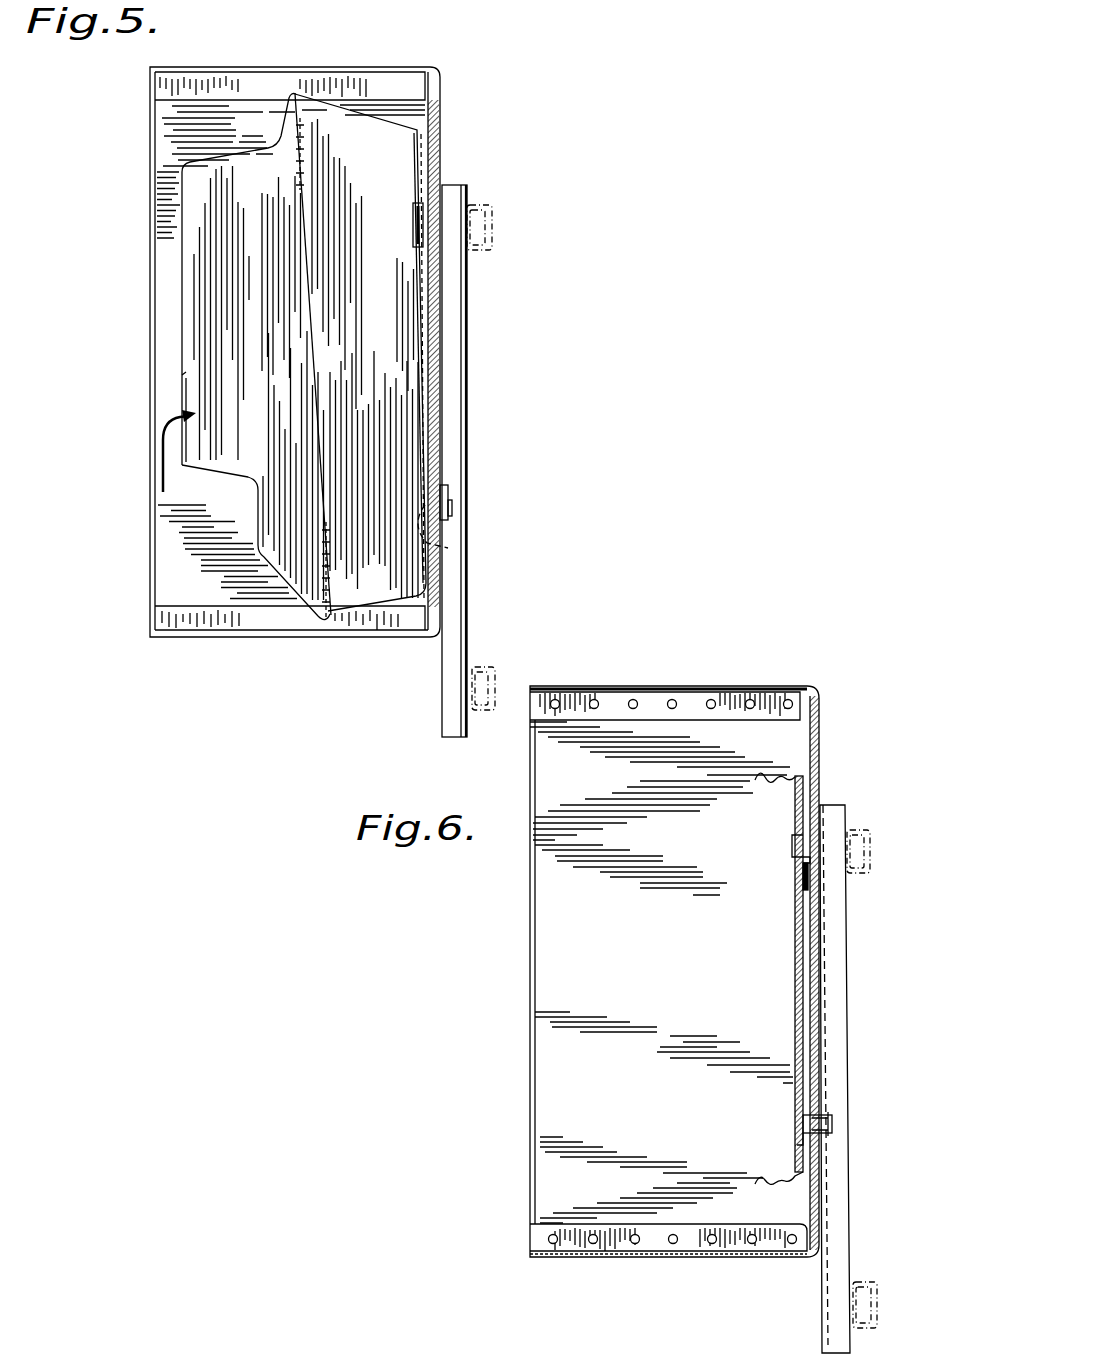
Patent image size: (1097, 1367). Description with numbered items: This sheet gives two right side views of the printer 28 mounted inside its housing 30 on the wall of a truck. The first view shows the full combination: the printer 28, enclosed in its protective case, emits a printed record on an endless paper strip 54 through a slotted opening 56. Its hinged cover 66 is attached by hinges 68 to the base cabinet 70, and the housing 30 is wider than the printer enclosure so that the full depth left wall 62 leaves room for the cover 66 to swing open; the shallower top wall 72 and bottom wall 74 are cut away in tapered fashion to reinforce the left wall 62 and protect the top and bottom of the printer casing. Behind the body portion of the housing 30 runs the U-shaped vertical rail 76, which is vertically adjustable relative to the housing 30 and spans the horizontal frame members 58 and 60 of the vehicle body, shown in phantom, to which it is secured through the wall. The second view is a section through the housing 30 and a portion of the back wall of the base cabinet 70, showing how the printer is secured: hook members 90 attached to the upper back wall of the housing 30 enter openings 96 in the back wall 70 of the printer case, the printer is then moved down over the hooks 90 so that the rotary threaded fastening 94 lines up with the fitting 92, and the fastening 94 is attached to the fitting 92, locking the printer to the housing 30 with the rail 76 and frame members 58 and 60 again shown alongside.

In FIG. 5, the printer 28 is at (378, 468).
In FIG. 5, the housing 30 is at (350, 55).
In FIG. 6, the housing 30 is at (780, 670).
In FIG. 5, the endless paper strip 54 is at (163, 457).
In FIG. 5, the slotted opening 56 is at (182, 410).
In FIG. 5, the horizontal frame member 58 is at (495, 215).
In FIG. 6, the horizontal frame member 58 is at (872, 845).
In FIG. 5, the horizontal frame member 60 is at (492, 665).
In FIG. 6, the horizontal frame member 60 is at (880, 1300).
In FIG. 5, the left wall 62 is at (160, 135).
In FIG. 6, the left wall 62 is at (548, 988).
In FIG. 5, the hinged cover 66 is at (205, 237).
In FIG. 5, the hinges 68 is at (302, 153).
In FIG. 5, the base cabinet 70 is at (400, 360).
In FIG. 6, the base cabinet 70 is at (797, 985).
In FIG. 5, the top wall 72 is at (260, 67).
In FIG. 6, the top wall 72 is at (670, 686).
In FIG. 5, the bottom wall 74 is at (212, 638).
In FIG. 6, the bottom wall 74 is at (712, 1258).
In FIG. 5, the vertical rail 76 is at (466, 613).
In FIG. 6, the vertical rail 76 is at (848, 1232).
In FIG. 5, the hook members 90 is at (412, 220).
In FIG. 6, the hook members 90 is at (792, 843).
In FIG. 5, the fitting 92 is at (445, 497).
In FIG. 6, the fitting 92 is at (826, 1114).
In FIG. 5, the rotary fastening 94 is at (448, 548).
In FIG. 6, the rotary fastening 94 is at (810, 1121).
In FIG. 6, the openings 96 is at (803, 878).